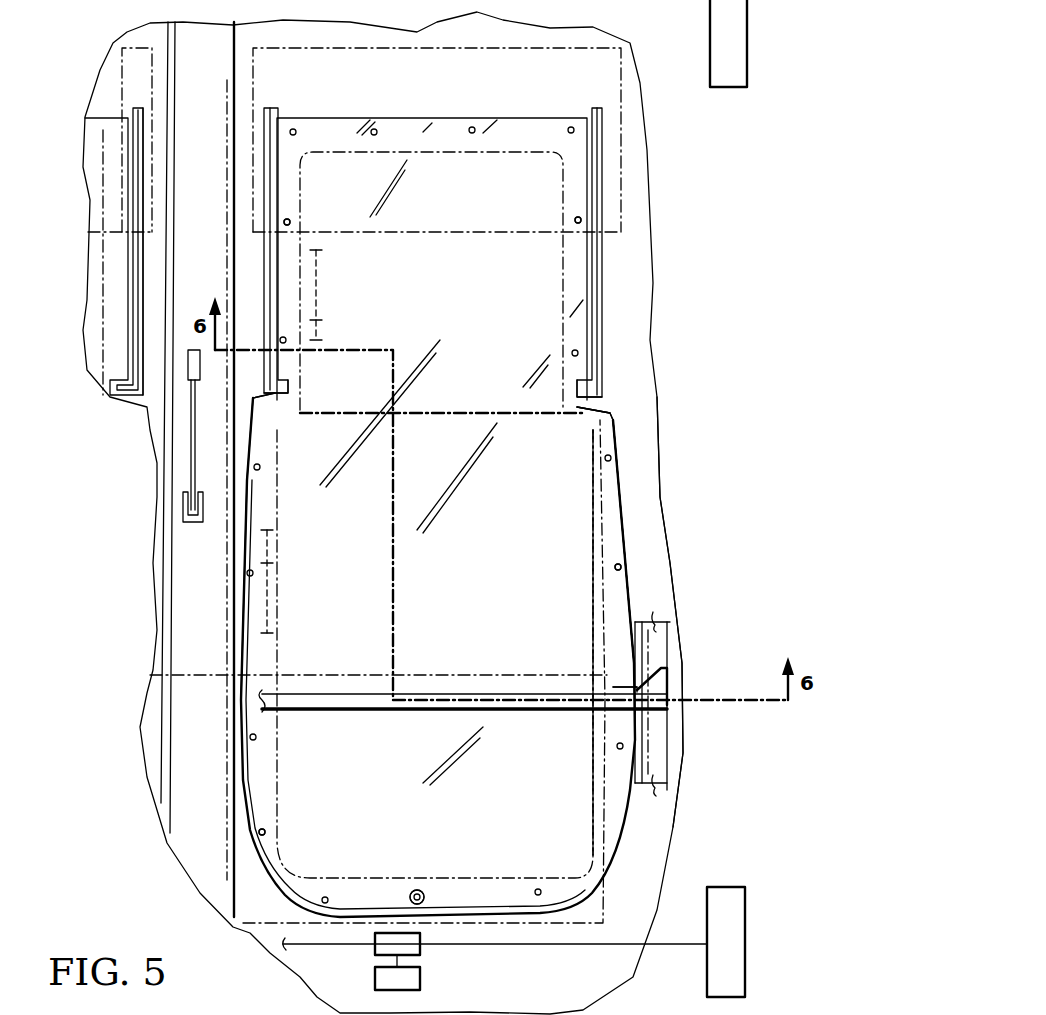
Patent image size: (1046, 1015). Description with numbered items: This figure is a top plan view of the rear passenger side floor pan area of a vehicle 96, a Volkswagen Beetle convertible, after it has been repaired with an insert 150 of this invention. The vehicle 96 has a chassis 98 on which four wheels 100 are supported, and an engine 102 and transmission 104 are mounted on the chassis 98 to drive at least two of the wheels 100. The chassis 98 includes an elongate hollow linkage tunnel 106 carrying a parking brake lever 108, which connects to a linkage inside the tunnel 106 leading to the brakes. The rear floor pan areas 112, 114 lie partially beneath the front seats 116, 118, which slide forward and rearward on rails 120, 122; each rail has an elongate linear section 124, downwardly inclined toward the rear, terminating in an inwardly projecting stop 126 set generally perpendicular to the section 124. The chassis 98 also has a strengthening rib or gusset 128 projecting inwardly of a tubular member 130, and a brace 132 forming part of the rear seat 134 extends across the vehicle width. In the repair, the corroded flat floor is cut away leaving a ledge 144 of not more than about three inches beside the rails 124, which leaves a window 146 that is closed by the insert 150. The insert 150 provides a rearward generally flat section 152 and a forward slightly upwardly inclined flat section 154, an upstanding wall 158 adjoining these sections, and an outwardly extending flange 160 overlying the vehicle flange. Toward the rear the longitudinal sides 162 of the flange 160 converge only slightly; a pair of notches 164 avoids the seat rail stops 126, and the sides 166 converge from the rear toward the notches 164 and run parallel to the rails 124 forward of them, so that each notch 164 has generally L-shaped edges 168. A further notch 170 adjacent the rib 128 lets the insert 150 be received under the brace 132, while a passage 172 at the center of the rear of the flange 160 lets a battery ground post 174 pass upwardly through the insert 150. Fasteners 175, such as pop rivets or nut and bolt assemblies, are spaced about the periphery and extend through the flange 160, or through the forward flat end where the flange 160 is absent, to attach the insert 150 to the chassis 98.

The vehicle 96 is at (700, 185).
The chassis 98 is at (688, 735).
The wheels 100 is at (748, 72).
The engine 102 is at (397, 972).
The transmission 104 is at (397, 944).
The linkage tunnel 106 is at (167, 506).
The parking brake lever 108 is at (193, 460).
The rear floor pan area 112 is at (100, 370).
The rear floor pan area 114 is at (645, 375).
The front seat 116 is at (125, 48).
The front seat 118 is at (433, 48).
The seat rail 120 is at (152, 270).
The seat rail 122 is at (285, 321).
The linear section 124 is at (262, 266).
The stop 126 is at (272, 393).
The strengthening rib 128 is at (625, 705).
The tubular member 130 is at (660, 657).
The brace 132 is at (348, 702).
The rear seat 134 is at (315, 672).
The ledge 144 is at (322, 290).
The window 146 is at (272, 563).
The insert 150 is at (640, 468).
The rearward flat section 152 is at (457, 631).
The forward inclined flat section 154 is at (445, 271).
The upstanding wall 158 is at (593, 552).
The flange 160 is at (610, 538).
The longitudinal sides 162 is at (627, 510).
The notches 164 is at (250, 395).
The sides 166 is at (265, 198).
The L-shaped edges 168 is at (285, 390).
The notch 170 is at (625, 690).
The passage 172 is at (425, 897).
The battery ground post 174 is at (408, 897).
The fasteners 175 is at (614, 568).